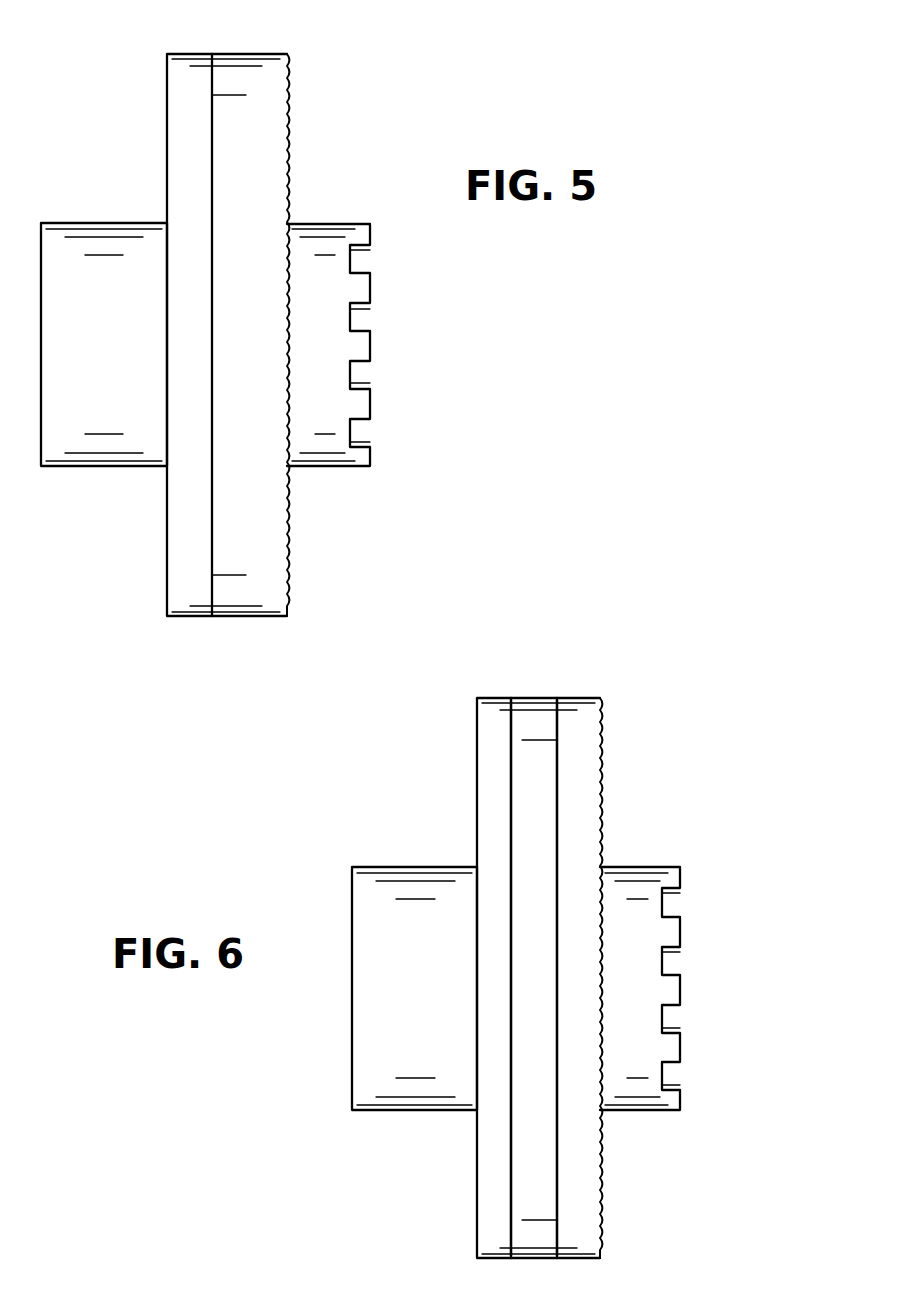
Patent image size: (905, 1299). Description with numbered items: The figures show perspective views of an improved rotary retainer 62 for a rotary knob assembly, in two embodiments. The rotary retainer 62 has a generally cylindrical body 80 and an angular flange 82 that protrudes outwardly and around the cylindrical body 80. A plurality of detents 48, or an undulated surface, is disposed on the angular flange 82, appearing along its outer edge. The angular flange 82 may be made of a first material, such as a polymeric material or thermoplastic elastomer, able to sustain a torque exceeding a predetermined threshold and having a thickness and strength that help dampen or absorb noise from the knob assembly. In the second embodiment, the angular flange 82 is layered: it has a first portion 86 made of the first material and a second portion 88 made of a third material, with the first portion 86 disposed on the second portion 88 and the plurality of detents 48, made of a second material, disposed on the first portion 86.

In FIG. 5, the detents 48 is at (258, 54).
In FIG. 6, the detents 48 is at (574, 698).
In FIG. 5, the rotary retainer 62 is at (388, 100).
In FIG. 6, the rotary retainer 62 is at (700, 686).
In FIG. 5, the cylindrical body 80 is at (97, 223).
In FIG. 6, the cylindrical body 80 is at (407, 867).
In FIG. 5, the angular flange 82 is at (184, 54).
In FIG. 6, the angular flange 82 is at (523, 624).
In FIG. 6, the first portion 86 is at (527, 698).
In FIG. 6, the second portion 88 is at (483, 698).